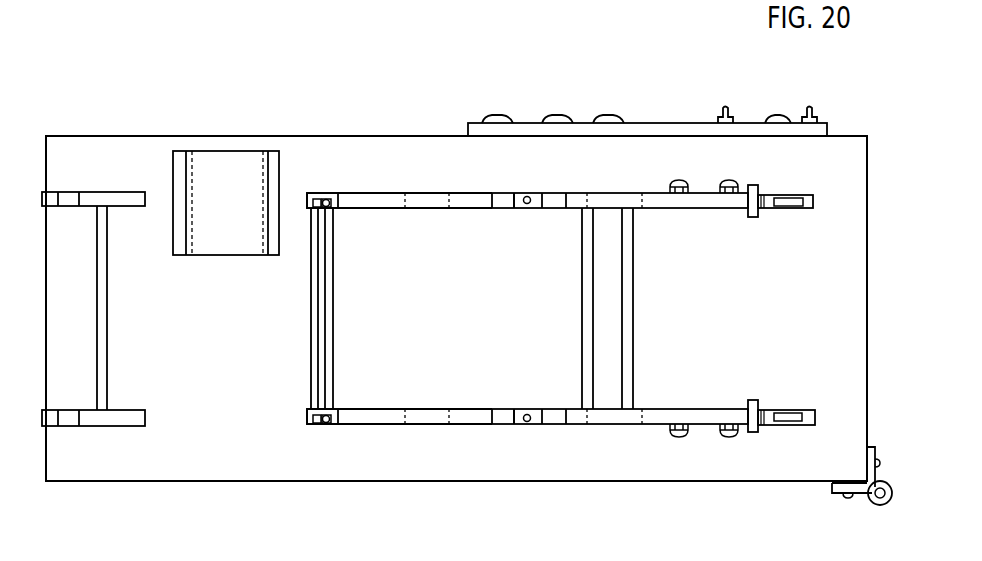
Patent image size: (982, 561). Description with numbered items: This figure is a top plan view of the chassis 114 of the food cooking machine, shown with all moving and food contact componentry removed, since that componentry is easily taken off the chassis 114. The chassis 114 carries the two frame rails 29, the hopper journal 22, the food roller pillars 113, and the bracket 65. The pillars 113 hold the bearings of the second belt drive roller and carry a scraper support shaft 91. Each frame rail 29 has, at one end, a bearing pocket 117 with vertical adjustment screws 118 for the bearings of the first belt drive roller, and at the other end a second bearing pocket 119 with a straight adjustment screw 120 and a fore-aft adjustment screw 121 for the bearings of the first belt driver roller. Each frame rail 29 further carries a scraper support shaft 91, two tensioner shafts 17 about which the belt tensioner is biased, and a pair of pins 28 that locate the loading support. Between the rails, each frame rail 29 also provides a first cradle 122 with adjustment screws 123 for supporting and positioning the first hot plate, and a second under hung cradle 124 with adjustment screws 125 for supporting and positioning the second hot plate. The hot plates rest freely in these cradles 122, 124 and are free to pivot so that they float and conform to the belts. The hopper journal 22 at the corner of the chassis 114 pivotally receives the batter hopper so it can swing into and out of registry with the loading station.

The chassis 114 is at (617, 54).
The frame rails 29 is at (315, 155).
The bracket 65 is at (217, 159).
The food roller pillars 113 is at (95, 192).
The scraper support shaft 91 is at (108, 303).
The tensioner shafts 17 is at (328, 292).
The vertical adjustment screws 118 is at (318, 197).
The bearing pocket 117 is at (330, 198).
The first cradle 122 is at (518, 193).
The adjustment screws 123 is at (528, 195).
The second under hung cradle 124 is at (444, 210).
The adjustment screws 125 is at (415, 200).
The pins 28 is at (730, 180).
The fore-aft adjustment screw 121 is at (755, 219).
The straight adjustment screw 120 is at (783, 209).
The second bearing pocket 119 is at (792, 208).
The hopper journal 22 is at (869, 504).